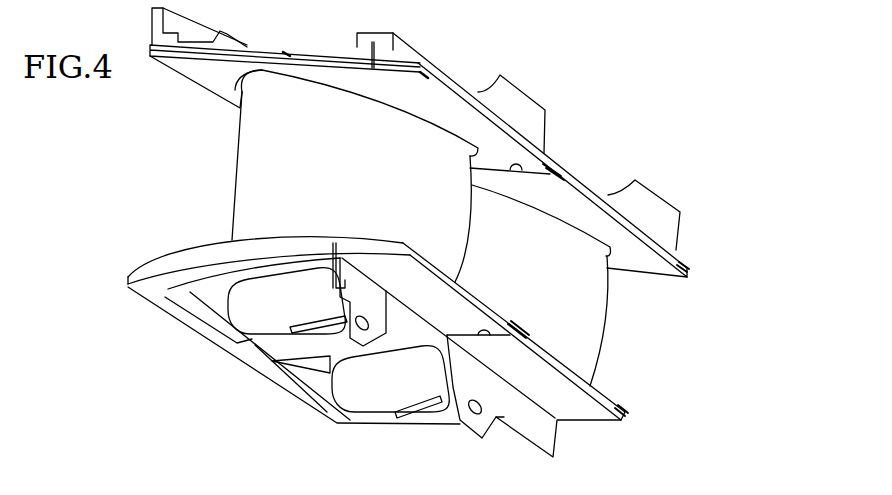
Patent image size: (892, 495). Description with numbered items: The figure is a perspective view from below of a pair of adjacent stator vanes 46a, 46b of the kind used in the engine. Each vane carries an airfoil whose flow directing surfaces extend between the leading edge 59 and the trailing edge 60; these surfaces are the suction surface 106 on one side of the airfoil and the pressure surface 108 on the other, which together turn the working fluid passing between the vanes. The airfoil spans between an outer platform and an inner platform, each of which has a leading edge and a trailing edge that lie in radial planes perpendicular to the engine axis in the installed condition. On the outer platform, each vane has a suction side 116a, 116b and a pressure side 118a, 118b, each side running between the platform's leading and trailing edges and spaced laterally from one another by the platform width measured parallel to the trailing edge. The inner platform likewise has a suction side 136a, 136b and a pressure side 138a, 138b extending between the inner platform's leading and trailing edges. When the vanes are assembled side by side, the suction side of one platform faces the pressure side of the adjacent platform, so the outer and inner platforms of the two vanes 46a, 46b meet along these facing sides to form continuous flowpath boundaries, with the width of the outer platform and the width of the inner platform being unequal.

The stator vane 46a is at (225, 185).
The stator vane 46b is at (618, 342).
The leading edge 59 is at (240, 137).
The trailing edge 60 is at (472, 200).
The suction surface 106 is at (360, 202).
The pressure surface 108 is at (438, 240).
The suction side of outer platform 116a is at (285, 53).
The suction side of outer platform 116b is at (512, 173).
The pressure side of outer platform 118a is at (557, 167).
The pressure side of outer platform 118b is at (688, 276).
The suction side of inner platform 136a is at (167, 267).
The suction side of inner platform 136b is at (483, 338).
The pressure side of inner platform 138a is at (520, 333).
The pressure side of inner platform 138b is at (626, 418).